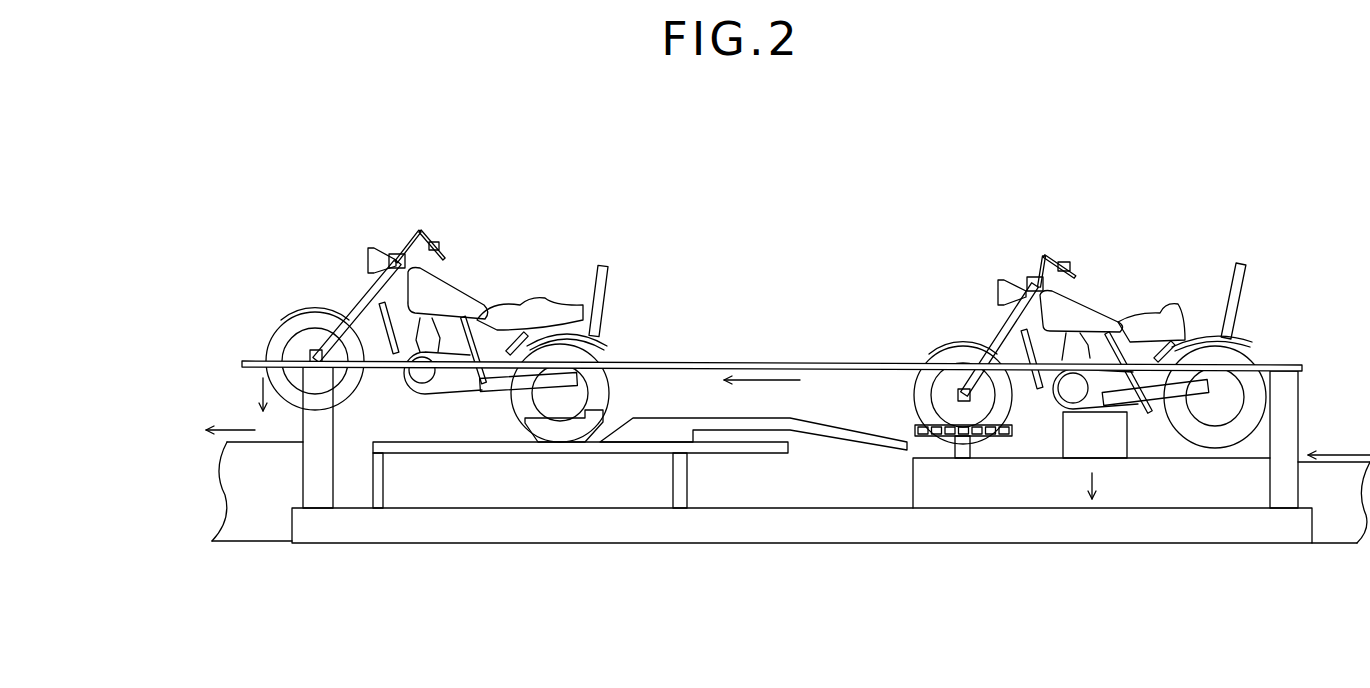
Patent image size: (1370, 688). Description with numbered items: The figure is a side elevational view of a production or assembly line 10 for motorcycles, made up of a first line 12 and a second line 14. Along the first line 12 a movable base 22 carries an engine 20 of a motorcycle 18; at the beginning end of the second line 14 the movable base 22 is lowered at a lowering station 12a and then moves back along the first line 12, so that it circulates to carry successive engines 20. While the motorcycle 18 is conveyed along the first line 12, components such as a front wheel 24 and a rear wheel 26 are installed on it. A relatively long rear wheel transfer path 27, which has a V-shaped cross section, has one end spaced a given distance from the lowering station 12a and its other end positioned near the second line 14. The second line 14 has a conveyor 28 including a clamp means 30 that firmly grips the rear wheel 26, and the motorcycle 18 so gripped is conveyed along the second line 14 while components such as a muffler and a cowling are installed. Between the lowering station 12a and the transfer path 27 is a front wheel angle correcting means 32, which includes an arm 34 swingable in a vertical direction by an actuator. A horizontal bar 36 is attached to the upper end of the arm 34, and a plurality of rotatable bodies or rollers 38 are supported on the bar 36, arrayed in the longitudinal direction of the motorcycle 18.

The production line 10 is at (923, 237).
The first line 12 is at (1328, 441).
The lowering station 12a is at (1070, 513).
The second line 14 is at (233, 406).
The motorcycle 18 is at (766, 333).
The engine 20 is at (1133, 400).
The movable base 22 is at (1105, 448).
The front wheel 24 is at (285, 330).
The rear wheel 26 is at (603, 398).
The rear wheel transfer path 27 is at (715, 422).
The conveyor 28 is at (440, 447).
The clamp means 30 is at (560, 433).
The front wheel angle correcting means 32 is at (946, 462).
The arm 34 is at (962, 453).
The horizontal bar 36 is at (961, 461).
The rollers 38 is at (925, 437).